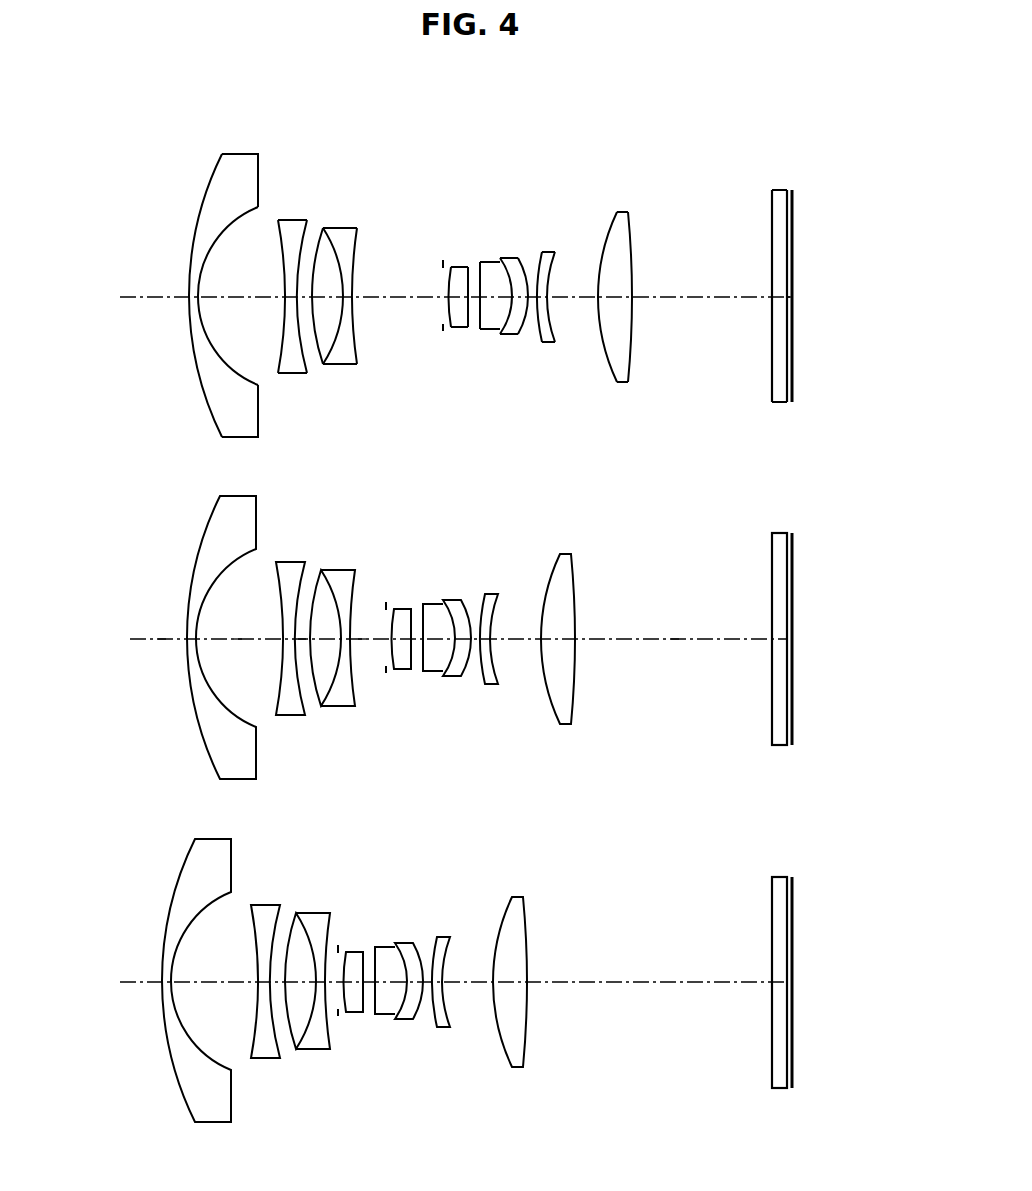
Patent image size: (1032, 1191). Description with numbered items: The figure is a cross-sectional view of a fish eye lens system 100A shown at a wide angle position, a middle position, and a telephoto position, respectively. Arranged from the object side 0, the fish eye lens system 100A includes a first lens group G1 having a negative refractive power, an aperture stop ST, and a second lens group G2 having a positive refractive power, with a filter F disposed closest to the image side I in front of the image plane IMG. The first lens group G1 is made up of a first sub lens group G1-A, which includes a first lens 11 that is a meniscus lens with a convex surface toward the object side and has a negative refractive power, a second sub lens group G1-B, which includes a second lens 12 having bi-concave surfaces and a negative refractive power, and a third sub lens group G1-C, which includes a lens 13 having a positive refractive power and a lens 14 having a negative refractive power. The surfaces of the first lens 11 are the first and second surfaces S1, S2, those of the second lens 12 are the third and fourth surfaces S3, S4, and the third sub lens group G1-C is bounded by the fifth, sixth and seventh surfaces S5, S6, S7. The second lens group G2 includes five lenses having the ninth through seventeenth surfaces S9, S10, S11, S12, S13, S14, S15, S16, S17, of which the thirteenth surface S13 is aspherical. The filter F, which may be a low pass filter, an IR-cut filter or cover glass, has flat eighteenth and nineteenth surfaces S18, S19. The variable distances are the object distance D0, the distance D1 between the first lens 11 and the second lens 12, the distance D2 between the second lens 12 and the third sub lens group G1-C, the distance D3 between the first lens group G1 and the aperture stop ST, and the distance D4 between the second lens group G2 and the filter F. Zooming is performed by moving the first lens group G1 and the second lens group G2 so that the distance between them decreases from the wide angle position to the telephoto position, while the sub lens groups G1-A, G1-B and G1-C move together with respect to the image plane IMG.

The fish eye lens system 100A is at (115, 149).
The object side 0 is at (445, 295).
The first lens group G1 is at (357, 99).
The second lens group G2 is at (443, 99).
The (1-A)-th lens group G1-A is at (241, 153).
The (1-B)-th lens group G1-B is at (295, 220).
The (1-C)-th lens group G1-C is at (320, 221).
The first surface S1 is at (198, 383).
The second surface S2 is at (208, 340).
The third surface S3 is at (283, 272).
The fourth surface S4 is at (300, 252).
The fifth surface S5 is at (312, 333).
The sixth surface S6 is at (340, 335).
The seventh surface S7 is at (357, 333).
The aperture stop ST is at (443, 268).
The ninth surface S9 is at (450, 323).
The tenth surface S10 is at (468, 325).
The eleventh surface S11 is at (486, 262).
The twelfth surface S12 is at (507, 330).
The thirteenth surface S13 is at (525, 262).
The fourteenth surface S14 is at (540, 330).
The fifteenth surface S15 is at (552, 327).
The sixteenth surface S16 is at (607, 360).
The seventeenth surface S17 is at (630, 360).
The eighteenth surface S18 is at (772, 243).
The nineteenth surface S19 is at (787, 217).
The filter F is at (775, 190).
The image plane IMG is at (792, 190).
The image side I is at (795, 297).
The first lens 11 is at (207, 542).
The second lens 12 is at (290, 563).
The lens 13 is at (323, 587).
The lens 14 is at (347, 577).
The variable distance D0 is at (162, 640).
The variable distance D1 is at (238, 640).
The variable distance D2 is at (302, 640).
The variable distance D3 is at (362, 640).
The variable distance D4 is at (675, 640).